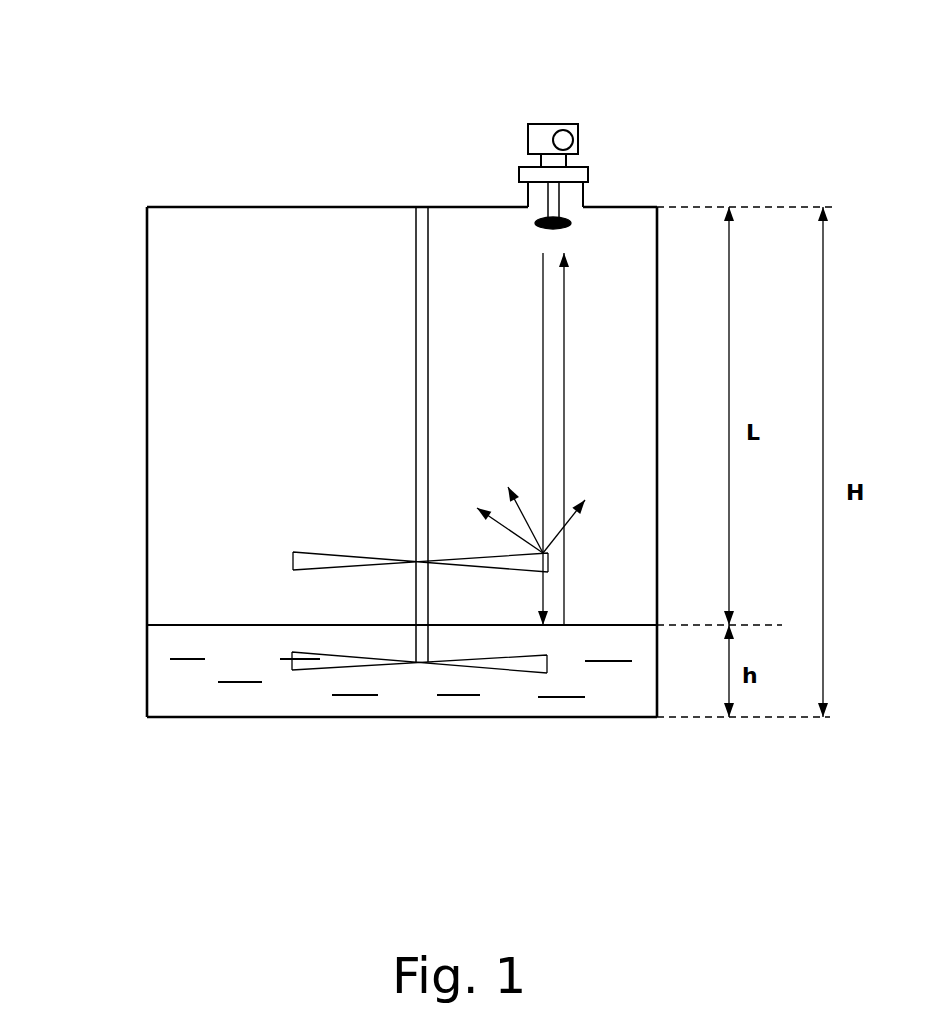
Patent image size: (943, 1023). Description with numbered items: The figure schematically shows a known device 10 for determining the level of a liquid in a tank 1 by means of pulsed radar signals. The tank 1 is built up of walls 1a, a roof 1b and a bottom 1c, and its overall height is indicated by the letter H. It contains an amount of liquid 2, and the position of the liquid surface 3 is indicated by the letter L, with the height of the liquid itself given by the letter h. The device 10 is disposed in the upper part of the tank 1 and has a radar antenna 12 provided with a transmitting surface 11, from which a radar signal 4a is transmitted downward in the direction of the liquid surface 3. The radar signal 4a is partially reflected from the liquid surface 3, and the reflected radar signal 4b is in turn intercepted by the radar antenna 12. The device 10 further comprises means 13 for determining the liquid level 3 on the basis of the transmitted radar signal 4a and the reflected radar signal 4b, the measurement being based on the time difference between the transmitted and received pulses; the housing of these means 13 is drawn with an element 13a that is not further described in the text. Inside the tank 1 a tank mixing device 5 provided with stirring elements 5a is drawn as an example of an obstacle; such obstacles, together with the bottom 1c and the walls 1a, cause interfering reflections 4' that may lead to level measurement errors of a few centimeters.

The tank 1 is at (362, 459).
The walls 1a is at (142, 423).
The roof 1b is at (212, 205).
The bottom 1c is at (224, 717).
The liquid 2 is at (168, 681).
The liquid surface 3 is at (222, 620).
The radar signal 4a is at (537, 353).
The reflected radar signal 4b is at (570, 383).
The reflections 4' is at (466, 489).
The tank mixing device 5 is at (390, 332).
The stirring elements 5a is at (335, 565).
The device 10 is at (574, 177).
The transmitting surface 11 is at (567, 238).
The radar antenna 12 is at (568, 213).
The means for determining the liquid level 13 is at (520, 128).
The indicator 13a is at (575, 128).